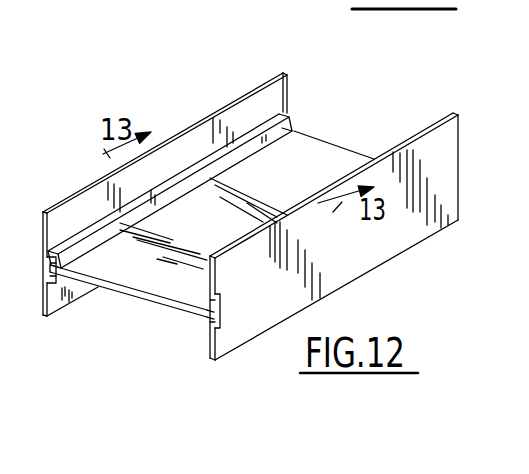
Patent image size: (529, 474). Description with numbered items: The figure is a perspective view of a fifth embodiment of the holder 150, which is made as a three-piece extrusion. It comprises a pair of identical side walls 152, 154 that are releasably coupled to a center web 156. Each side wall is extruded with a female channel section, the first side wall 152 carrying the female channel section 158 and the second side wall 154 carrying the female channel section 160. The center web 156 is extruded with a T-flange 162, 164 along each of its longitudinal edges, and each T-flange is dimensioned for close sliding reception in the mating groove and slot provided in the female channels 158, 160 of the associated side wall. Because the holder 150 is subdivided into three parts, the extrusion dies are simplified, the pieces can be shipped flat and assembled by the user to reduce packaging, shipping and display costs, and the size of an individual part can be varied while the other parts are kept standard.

The holder 150 is at (205, 91).
The side wall 152 is at (72, 216).
The side wall 154 is at (360, 276).
The center web 156 is at (122, 306).
The female channel section 158 is at (154, 182).
The female channel section 160 is at (196, 341).
The T-flange 162 is at (52, 277).
The T-flange 164 is at (213, 312).